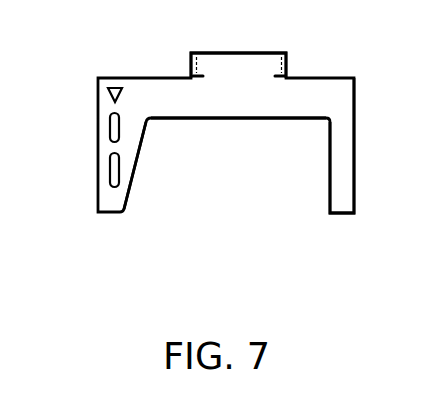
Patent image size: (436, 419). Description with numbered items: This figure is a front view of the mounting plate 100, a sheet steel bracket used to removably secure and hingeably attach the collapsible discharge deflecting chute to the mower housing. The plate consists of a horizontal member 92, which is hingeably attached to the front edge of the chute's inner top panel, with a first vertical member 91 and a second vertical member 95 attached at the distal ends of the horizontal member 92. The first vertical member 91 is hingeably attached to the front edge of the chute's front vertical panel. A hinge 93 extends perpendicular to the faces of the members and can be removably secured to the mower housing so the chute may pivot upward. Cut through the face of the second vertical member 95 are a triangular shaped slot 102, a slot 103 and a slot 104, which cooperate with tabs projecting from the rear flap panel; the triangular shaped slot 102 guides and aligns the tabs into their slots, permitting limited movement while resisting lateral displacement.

The mounting plate 100 is at (171, 78).
The hinge 93 is at (242, 53).
The horizontal member 92 is at (265, 118).
The first vertical member 91 is at (330, 170).
The second vertical member 95 is at (133, 167).
The triangular shaped slot 102 is at (108, 93).
The slot 103 is at (110, 130).
The slot 104 is at (110, 172).